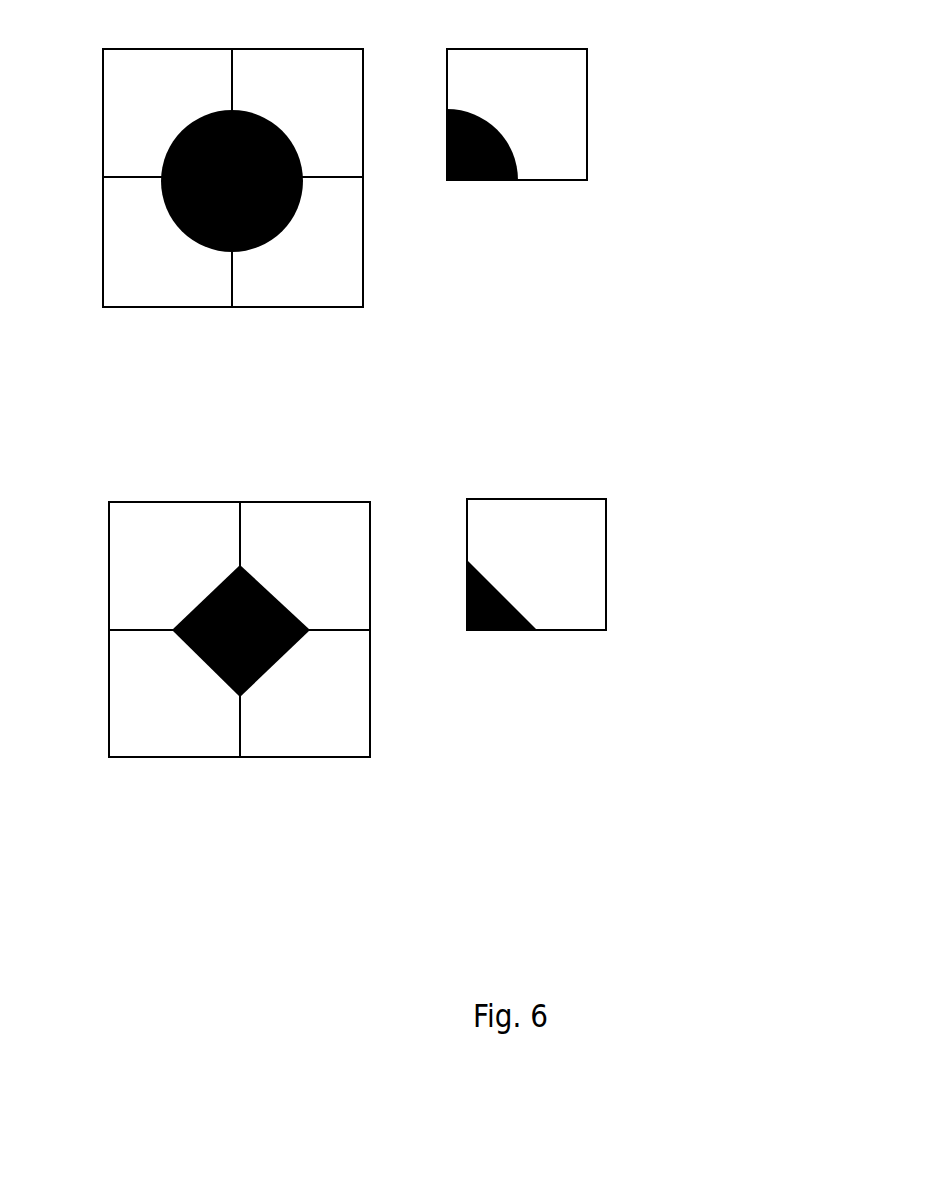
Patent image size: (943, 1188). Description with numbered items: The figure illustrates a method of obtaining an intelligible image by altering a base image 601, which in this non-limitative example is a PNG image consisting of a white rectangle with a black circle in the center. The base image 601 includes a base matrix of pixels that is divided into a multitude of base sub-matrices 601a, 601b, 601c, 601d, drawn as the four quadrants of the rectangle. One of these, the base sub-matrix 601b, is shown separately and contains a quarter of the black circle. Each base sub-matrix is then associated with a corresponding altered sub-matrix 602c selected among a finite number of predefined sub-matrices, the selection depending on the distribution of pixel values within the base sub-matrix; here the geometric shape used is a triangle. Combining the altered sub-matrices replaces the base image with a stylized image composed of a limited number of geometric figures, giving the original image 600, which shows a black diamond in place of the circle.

The original image 600 is at (368, 555).
The base image 601 is at (108, 145).
The base sub-matrix 601a is at (167, 113).
The base sub-matrix 601b is at (535, 113).
The base sub-matrix 601c is at (182, 242).
The base sub-matrix 601d is at (297, 242).
The altered sub-matrix 602c is at (549, 564).